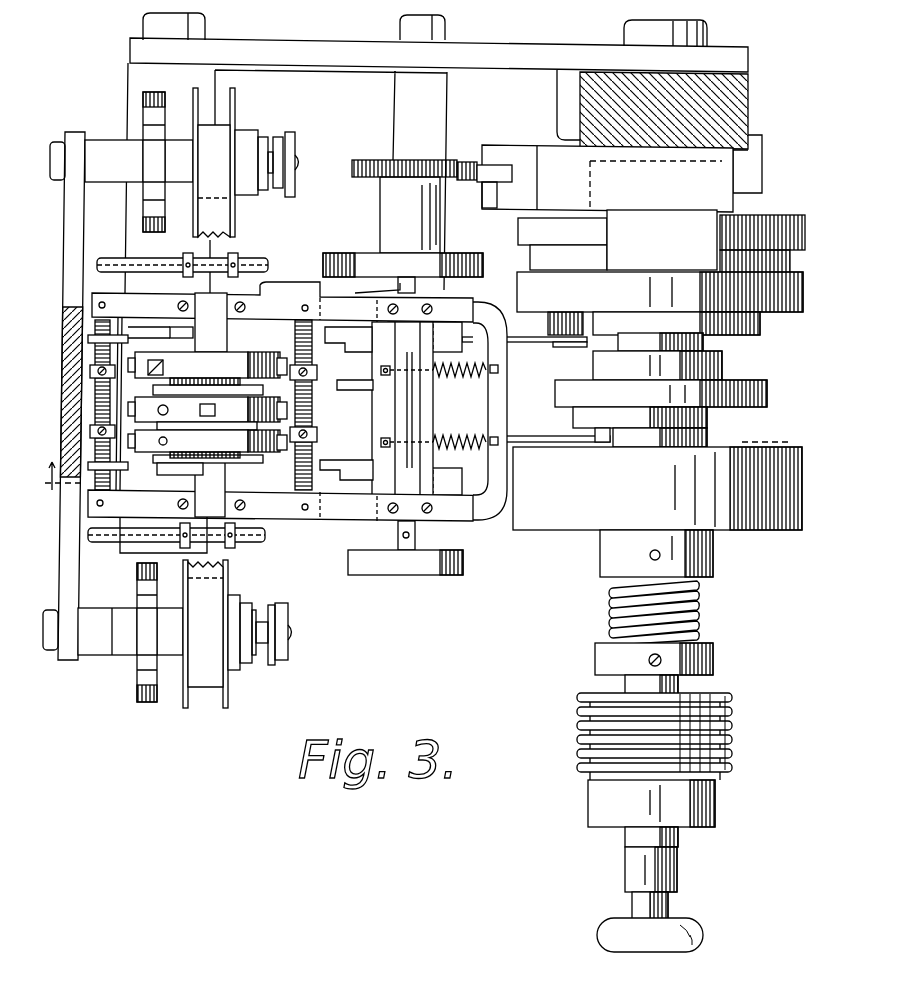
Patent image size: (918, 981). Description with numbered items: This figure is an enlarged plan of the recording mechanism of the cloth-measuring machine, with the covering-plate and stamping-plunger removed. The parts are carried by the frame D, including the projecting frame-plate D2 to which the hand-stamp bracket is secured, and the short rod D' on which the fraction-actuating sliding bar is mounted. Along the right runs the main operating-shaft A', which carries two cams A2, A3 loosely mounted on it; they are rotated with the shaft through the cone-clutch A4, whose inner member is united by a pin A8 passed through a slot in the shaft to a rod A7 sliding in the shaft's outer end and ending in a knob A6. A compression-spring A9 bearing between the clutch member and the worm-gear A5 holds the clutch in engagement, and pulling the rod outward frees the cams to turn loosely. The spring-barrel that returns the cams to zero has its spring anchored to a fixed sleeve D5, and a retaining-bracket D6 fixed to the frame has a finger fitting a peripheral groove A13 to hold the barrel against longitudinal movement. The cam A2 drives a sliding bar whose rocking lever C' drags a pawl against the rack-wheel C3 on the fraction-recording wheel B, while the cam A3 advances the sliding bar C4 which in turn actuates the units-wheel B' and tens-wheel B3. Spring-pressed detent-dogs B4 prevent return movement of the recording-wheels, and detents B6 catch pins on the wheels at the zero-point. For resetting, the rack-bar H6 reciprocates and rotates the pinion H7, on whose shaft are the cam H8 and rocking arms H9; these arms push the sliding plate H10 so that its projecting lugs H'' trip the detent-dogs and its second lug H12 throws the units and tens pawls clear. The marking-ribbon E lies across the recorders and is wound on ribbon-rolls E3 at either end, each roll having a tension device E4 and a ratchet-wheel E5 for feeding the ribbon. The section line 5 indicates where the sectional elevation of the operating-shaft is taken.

The frame D is at (456, 101).
The main operating-shaft A' is at (683, 31).
The projecting frame-plate D2 is at (65, 370).
The ratchet-wheel E5 is at (143, 103).
The ribbon-roll E3 is at (237, 100).
The ribbon E is at (209, 406).
The tension device E4 is at (283, 138).
The short rod D' is at (372, 120).
The pinion H7 is at (312, 193).
The cam H8 is at (360, 242).
The rack-bar H6 is at (478, 165).
The peripheral groove A13 is at (530, 258).
The retaining-bracket D6 is at (662, 240).
The fixed sleeve D5 is at (745, 213).
The cam A2 is at (790, 332).
The cam A3 is at (707, 418).
The cone-clutch A4 is at (657, 488).
The pin A8 is at (650, 555).
The compression-spring A9 is at (620, 616).
The worm-gear A5 is at (585, 700).
The rod A7 is at (625, 848).
The knob A6 is at (605, 925).
The section line 5 is at (409, 460).
The rocking lever C' is at (524, 358).
The sliding bar C4 is at (540, 432).
The rocking arm H9 is at (462, 333).
The sliding plate H10 is at (425, 416).
The detent-dog B4 is at (268, 337).
The detent B6 is at (108, 512).
The rack-wheel C3 is at (170, 333).
The fraction-recording wheel B is at (207, 373).
The units-wheel B' is at (207, 411).
The tens-wheel B3 is at (207, 451).
The projecting lug H'' is at (336, 428).
The second lug H12 is at (345, 470).